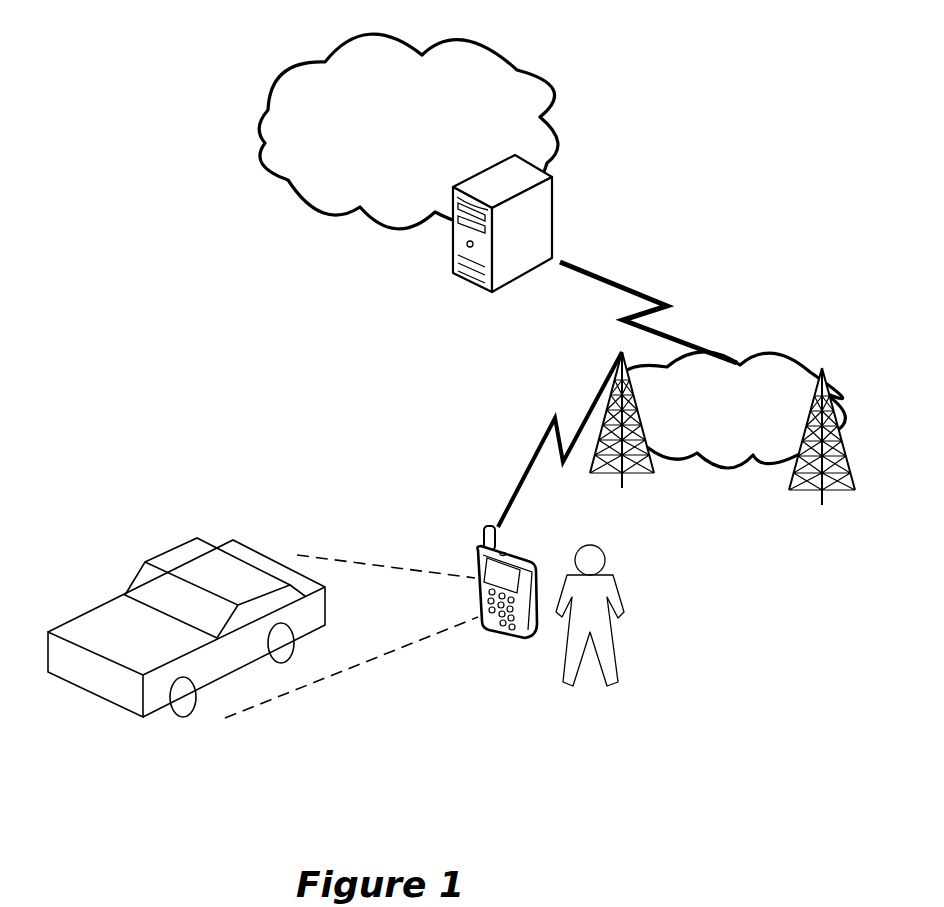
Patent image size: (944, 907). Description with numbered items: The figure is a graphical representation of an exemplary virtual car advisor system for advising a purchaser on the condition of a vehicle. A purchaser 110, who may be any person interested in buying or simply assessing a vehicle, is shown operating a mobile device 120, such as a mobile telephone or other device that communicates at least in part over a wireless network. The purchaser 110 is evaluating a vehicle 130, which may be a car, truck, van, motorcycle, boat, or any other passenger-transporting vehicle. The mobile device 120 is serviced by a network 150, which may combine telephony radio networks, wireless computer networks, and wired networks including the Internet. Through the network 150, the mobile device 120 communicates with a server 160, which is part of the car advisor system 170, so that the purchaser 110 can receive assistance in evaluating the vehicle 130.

The purchaser 110 is at (568, 667).
The mobile device 120 is at (483, 628).
The vehicle 130 is at (83, 688).
The network 150 is at (722, 428).
The server 160 is at (455, 272).
The car advisor system 170 is at (408, 131).